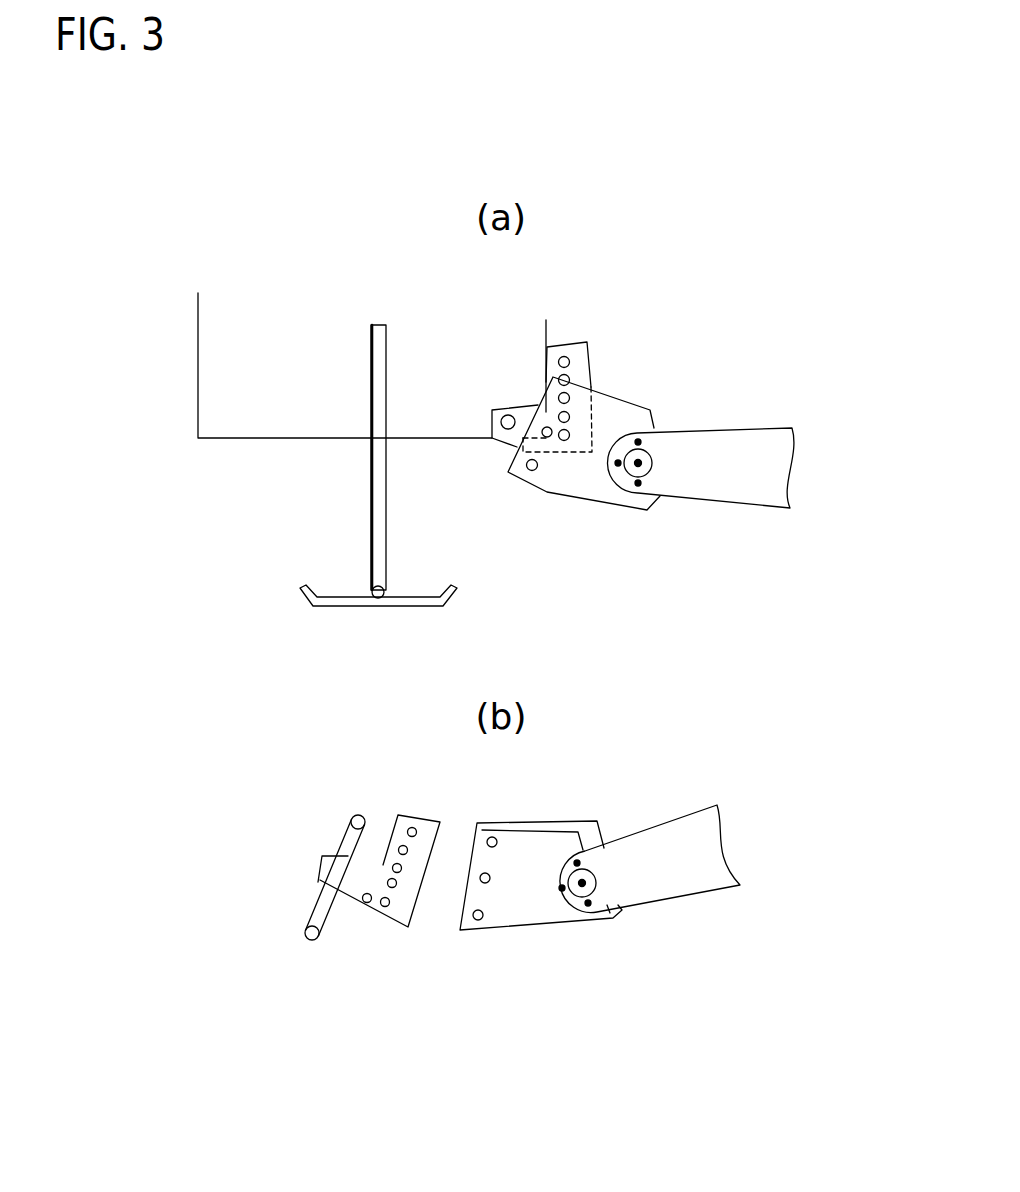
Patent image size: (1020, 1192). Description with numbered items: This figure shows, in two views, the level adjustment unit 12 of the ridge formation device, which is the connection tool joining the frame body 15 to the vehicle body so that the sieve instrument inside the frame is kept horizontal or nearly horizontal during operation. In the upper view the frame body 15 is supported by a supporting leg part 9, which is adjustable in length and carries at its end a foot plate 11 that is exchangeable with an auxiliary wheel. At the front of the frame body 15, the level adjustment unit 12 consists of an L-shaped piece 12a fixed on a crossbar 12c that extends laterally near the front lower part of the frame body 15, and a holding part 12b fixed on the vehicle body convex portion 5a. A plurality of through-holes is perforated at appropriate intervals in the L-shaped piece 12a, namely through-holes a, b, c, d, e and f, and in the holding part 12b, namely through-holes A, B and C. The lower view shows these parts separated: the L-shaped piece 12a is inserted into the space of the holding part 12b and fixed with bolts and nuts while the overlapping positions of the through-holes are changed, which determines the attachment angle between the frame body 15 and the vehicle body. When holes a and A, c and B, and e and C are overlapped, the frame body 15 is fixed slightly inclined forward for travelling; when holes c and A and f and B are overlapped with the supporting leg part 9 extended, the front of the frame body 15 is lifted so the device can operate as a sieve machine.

The supporting leg part 9 is at (378, 350).
The foot plate 11 is at (413, 597).
The frame body 15 is at (257, 415).
The level adjustment unit 12 is at (383, 1010).
The L-shaped piece 12a is at (578, 370).
The holding part 12b is at (587, 473).
The crossbar 12c is at (357, 815).
The vehicle body convex portion 5a is at (723, 477).
The through-hole a is at (408, 831).
The through-hole b is at (399, 850).
The through-hole c is at (393, 868).
The through-hole d is at (388, 883).
The through-hole e is at (385, 907).
The through-hole f is at (366, 903).
The through-hole A is at (492, 842).
The through-hole B is at (485, 878).
The through-hole C is at (478, 915).